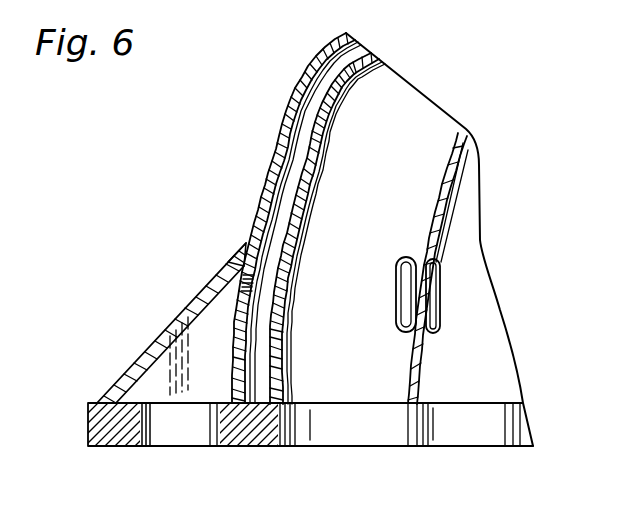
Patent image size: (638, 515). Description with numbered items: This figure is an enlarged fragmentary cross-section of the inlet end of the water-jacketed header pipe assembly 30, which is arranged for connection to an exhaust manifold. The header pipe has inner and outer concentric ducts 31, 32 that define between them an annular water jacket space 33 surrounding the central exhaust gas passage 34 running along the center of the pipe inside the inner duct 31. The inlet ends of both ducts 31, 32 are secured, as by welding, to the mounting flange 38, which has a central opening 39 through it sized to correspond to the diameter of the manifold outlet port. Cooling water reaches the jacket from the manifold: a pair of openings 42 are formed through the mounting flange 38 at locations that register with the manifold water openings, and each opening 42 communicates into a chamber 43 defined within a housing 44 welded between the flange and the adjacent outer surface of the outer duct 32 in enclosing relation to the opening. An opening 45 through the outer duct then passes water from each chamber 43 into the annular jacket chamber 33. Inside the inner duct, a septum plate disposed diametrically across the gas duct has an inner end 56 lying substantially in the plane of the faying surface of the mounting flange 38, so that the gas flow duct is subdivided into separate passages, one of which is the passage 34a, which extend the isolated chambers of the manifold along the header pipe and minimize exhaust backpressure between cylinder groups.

The header pipe assembly 30 is at (262, 106).
The inner duct 31 is at (298, 220).
The outer duct 32 is at (266, 162).
The annular water jacket space 33 is at (332, 80).
The central exhaust gas passage 34 is at (487, 316).
The passage 34a is at (372, 382).
The mounting flange 38 is at (90, 430).
The central opening 39 is at (400, 272).
The openings 42 is at (150, 440).
The chamber 43 is at (161, 355).
The housing 44 is at (196, 302).
The opening 45 is at (238, 262).
The inner end 56 is at (414, 440).